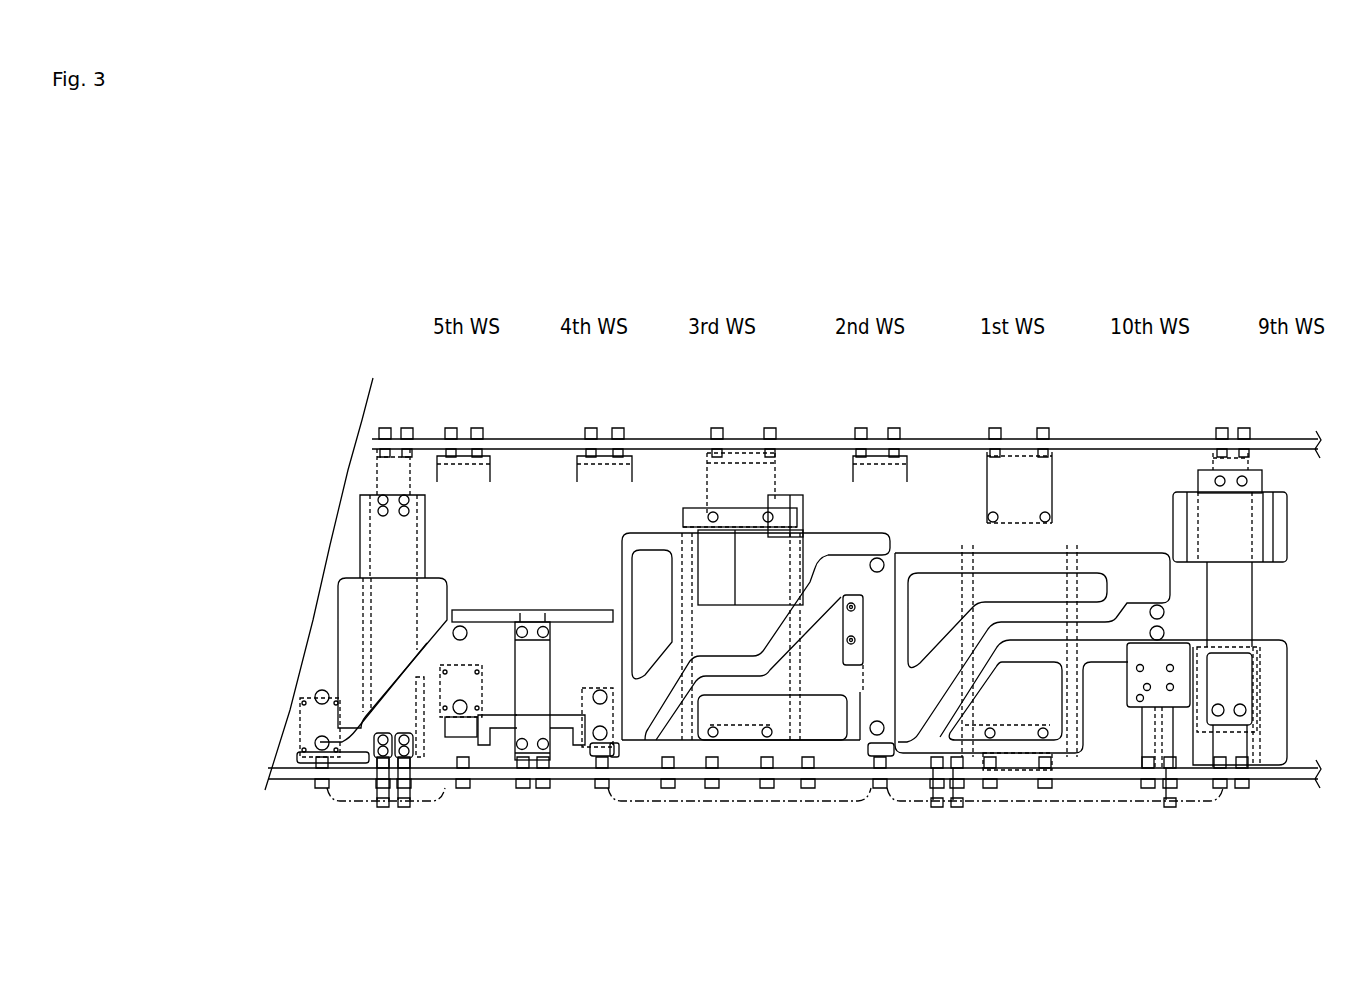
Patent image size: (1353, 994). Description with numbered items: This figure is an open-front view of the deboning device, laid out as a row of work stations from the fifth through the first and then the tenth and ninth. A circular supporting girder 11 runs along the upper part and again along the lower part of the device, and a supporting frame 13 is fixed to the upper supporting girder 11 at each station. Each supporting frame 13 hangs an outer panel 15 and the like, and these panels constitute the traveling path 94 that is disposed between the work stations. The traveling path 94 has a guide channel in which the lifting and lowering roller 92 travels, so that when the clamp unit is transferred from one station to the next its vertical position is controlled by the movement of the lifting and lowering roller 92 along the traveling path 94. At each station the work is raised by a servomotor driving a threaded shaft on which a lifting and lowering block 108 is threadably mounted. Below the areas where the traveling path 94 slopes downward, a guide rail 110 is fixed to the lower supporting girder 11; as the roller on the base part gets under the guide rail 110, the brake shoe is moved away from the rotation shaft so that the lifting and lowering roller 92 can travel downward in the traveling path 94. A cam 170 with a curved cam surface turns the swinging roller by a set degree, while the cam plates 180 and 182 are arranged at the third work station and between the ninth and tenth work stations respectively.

The supporting girder 11 is at (648, 436).
The supporting frame 13 is at (378, 470).
The outer panel 15 is at (433, 583).
The lifting and lowering roller 92 is at (318, 690).
The traveling path 94 is at (420, 682).
The lifting and lowering block 108 is at (593, 750).
The guide rail 110 is at (442, 799).
The cam 170 is at (875, 608).
The cam plate 180 is at (782, 495).
The cam plate 182 is at (1267, 494).